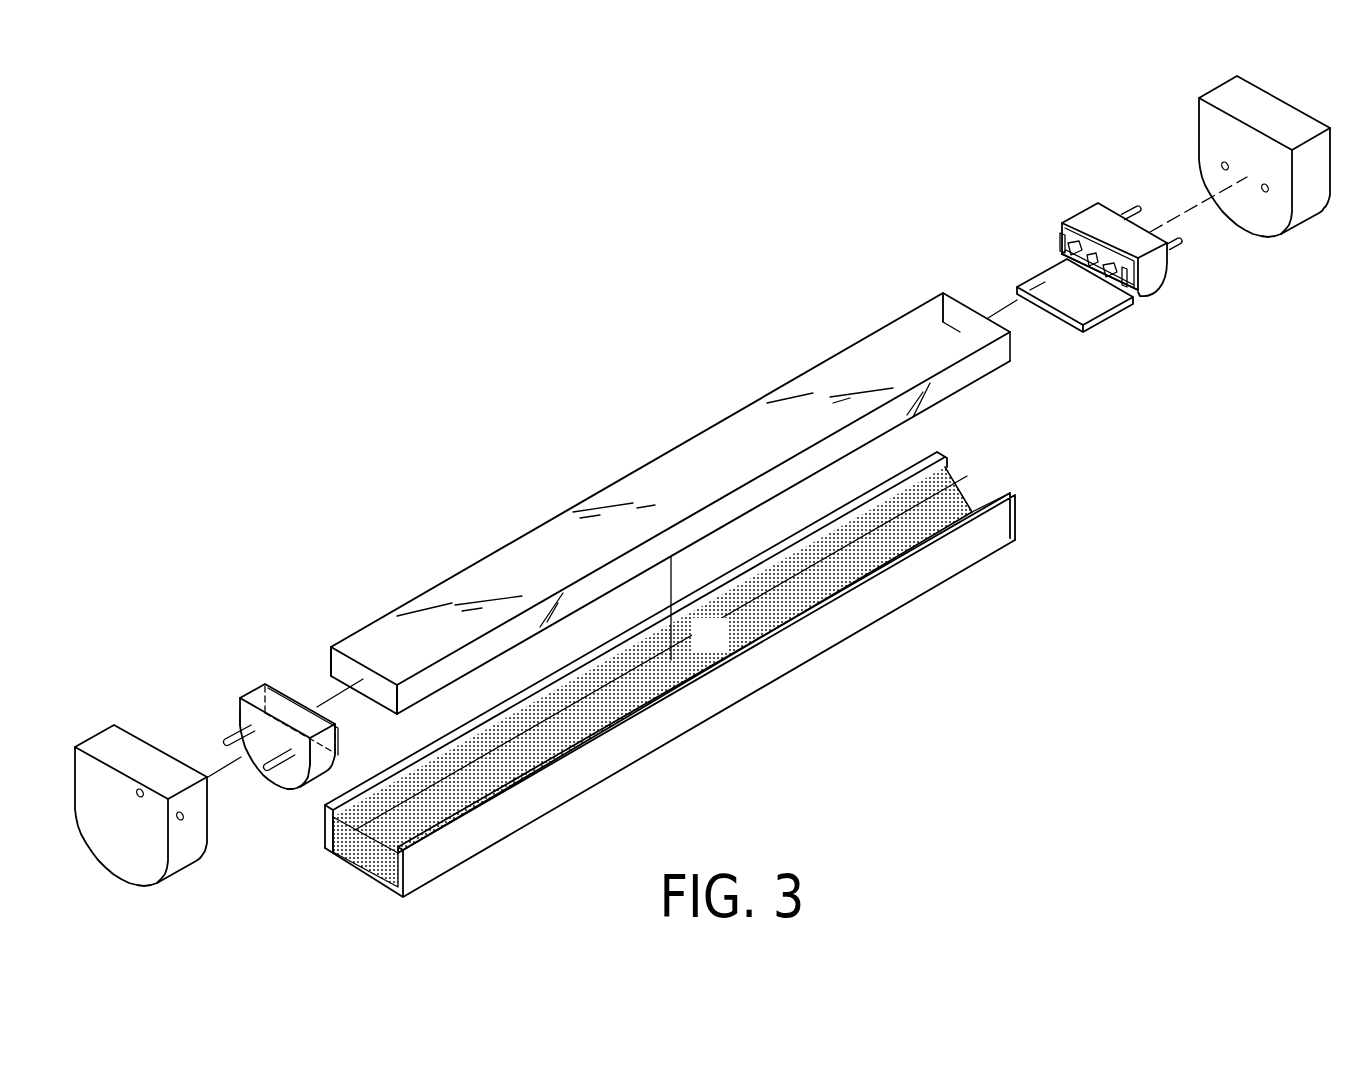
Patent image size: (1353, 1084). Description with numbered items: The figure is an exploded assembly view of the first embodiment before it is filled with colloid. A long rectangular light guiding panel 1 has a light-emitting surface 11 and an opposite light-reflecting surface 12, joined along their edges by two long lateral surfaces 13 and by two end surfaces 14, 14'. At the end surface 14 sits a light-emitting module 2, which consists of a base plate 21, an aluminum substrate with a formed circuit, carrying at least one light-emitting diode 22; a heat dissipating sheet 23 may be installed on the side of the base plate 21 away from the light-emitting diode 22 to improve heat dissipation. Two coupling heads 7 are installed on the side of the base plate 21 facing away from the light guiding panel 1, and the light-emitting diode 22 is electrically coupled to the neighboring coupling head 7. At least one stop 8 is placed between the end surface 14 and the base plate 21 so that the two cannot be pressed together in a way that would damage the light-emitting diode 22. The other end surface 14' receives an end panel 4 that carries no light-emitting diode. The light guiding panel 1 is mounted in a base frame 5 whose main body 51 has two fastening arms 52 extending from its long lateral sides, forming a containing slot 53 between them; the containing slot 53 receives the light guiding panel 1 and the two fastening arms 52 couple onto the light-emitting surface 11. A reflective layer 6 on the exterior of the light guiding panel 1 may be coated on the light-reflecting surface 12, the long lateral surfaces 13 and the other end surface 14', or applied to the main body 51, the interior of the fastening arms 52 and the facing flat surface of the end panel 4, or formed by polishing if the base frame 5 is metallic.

The light guiding panel 1 is at (670, 495).
The light-emitting surface 11 is at (705, 440).
The light-reflecting surface 12 is at (695, 492).
The long lateral surfaces 13 is at (645, 562).
The end surface 14 is at (820, 317).
The other end surface 14' is at (423, 556).
The light-emitting module 2 is at (1048, 259).
The base plate 21 is at (1062, 225).
The light-emitting diode 22 is at (1090, 253).
The heat dissipating sheet 23 is at (1040, 282).
The end panel 4 is at (278, 683).
The base frame 5 is at (617, 687).
The main body 51 is at (360, 872).
The fastening arms 52 is at (327, 832).
The containing slot 53 is at (695, 648).
The reflective layer 6 is at (950, 505).
The coupling heads 7 is at (243, 712).
The stop 8 is at (1122, 293).